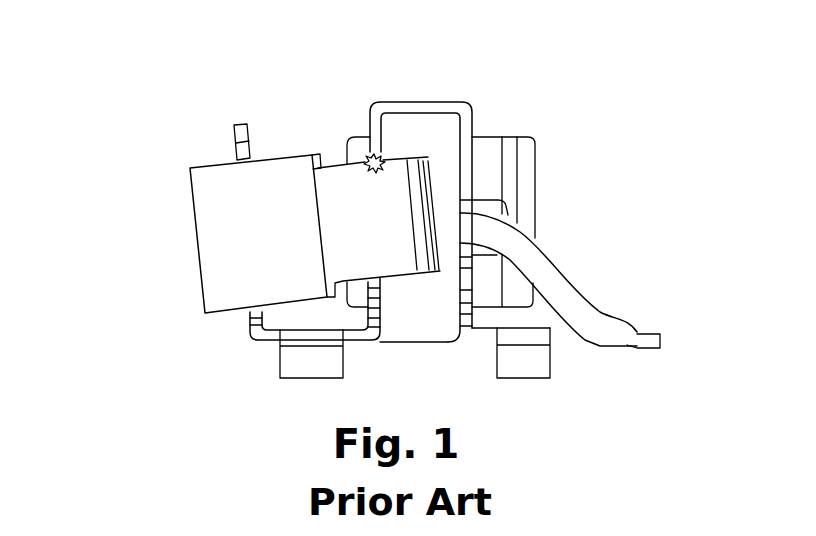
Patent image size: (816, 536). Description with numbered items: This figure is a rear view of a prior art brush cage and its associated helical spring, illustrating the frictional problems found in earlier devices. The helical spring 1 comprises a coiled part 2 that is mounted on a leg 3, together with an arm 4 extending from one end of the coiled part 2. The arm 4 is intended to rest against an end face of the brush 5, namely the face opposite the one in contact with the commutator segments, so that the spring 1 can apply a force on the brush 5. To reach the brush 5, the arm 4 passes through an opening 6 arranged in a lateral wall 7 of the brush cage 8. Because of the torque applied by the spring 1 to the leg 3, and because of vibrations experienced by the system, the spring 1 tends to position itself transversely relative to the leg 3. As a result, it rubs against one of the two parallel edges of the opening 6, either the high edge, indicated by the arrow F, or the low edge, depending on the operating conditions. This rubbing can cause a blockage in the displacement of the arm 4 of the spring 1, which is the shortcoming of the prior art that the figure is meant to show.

The helical spring 1 is at (203, 152).
The coiled part 2 is at (223, 237).
The leg 3 is at (250, 150).
The arm 4 is at (343, 188).
The brush 5 is at (450, 140).
The opening 6 is at (385, 282).
The lateral wall 7 is at (373, 128).
The brush cage 8 is at (465, 90).
The arrow F is at (383, 160).